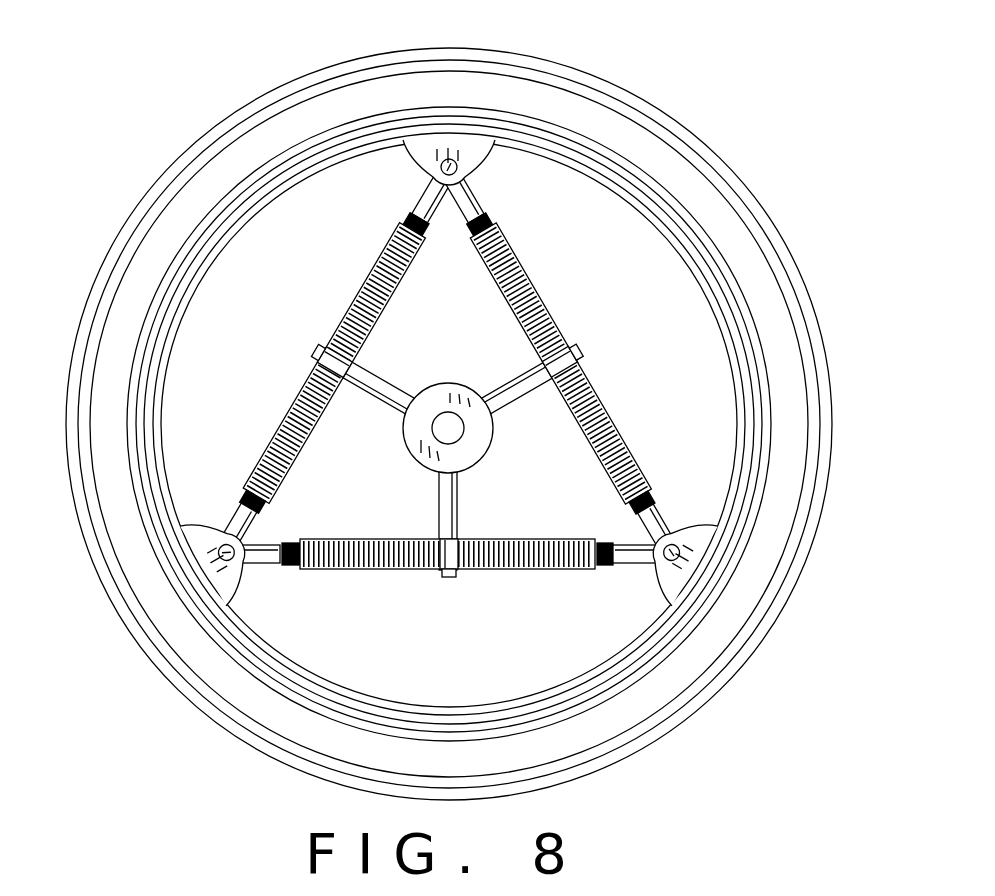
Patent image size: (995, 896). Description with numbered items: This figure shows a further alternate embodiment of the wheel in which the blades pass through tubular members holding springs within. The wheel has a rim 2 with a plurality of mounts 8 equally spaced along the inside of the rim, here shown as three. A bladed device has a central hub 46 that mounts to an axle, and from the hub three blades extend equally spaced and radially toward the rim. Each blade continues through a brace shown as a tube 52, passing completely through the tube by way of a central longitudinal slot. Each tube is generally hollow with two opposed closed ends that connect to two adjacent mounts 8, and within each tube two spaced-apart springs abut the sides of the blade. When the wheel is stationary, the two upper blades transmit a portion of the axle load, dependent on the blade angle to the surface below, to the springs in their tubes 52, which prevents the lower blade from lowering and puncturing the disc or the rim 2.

The rim 2 is at (668, 240).
The mounts 8 is at (437, 158).
The central hub 46 is at (469, 448).
The tube 52 is at (522, 268).